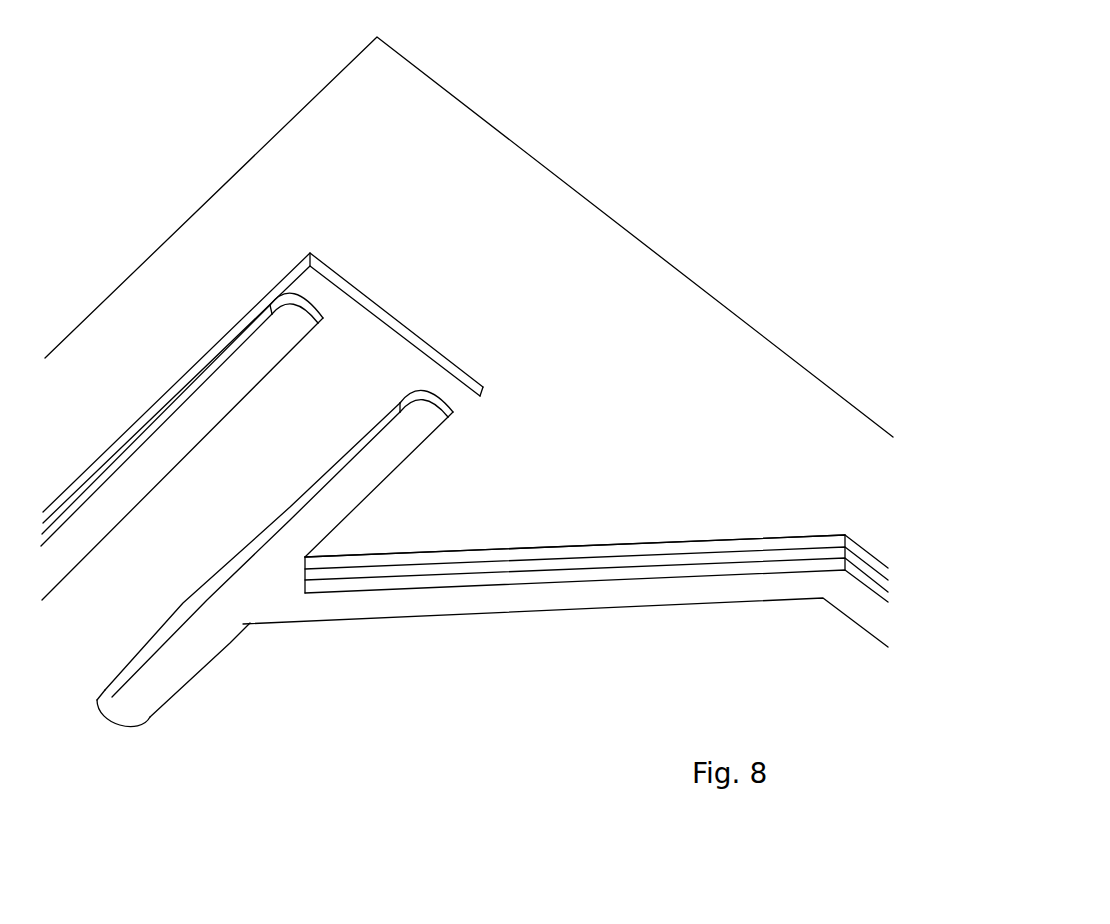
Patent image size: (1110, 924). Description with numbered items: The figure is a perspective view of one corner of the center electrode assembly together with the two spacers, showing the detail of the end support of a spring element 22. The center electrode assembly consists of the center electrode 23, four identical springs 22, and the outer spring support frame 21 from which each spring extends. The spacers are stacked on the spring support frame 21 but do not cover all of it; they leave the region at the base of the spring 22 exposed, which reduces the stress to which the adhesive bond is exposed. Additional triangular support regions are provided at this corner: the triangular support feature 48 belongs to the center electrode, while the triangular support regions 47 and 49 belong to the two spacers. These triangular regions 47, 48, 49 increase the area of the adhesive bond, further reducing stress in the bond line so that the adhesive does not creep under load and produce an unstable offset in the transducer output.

The outer spring support frame 21 is at (377, 345).
The spring 22 is at (178, 523).
The center electrode 23 is at (565, 701).
The additional triangular support region of spacer 47 is at (305, 586).
The additional triangular spring support feature 48 is at (305, 577).
The additional triangular support region of spacer 49 is at (305, 567).